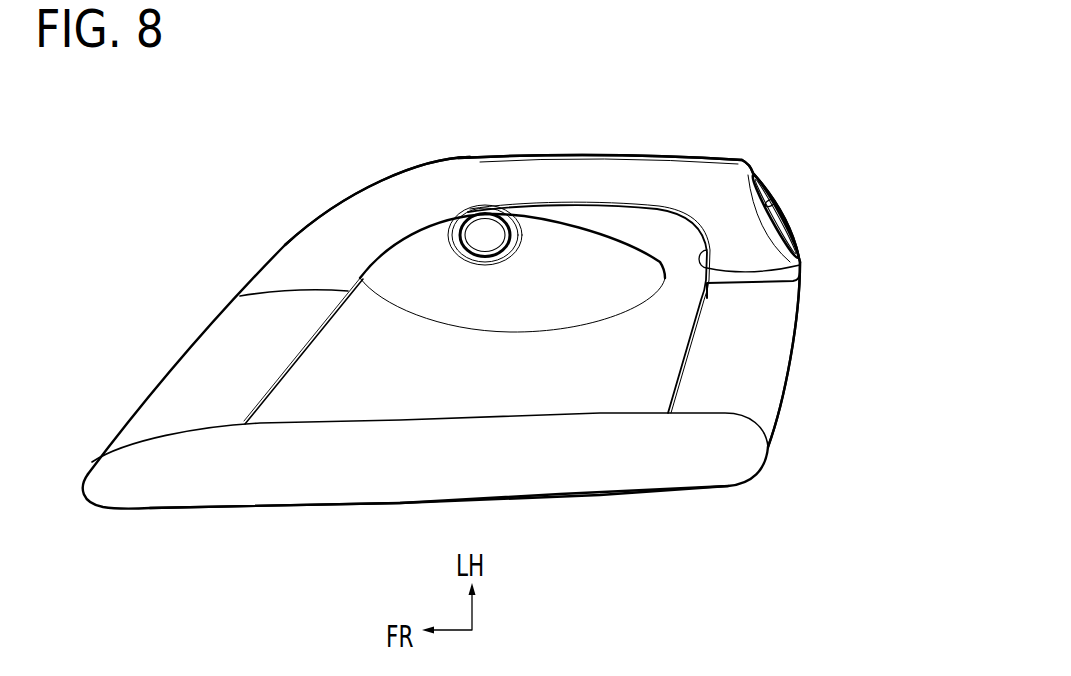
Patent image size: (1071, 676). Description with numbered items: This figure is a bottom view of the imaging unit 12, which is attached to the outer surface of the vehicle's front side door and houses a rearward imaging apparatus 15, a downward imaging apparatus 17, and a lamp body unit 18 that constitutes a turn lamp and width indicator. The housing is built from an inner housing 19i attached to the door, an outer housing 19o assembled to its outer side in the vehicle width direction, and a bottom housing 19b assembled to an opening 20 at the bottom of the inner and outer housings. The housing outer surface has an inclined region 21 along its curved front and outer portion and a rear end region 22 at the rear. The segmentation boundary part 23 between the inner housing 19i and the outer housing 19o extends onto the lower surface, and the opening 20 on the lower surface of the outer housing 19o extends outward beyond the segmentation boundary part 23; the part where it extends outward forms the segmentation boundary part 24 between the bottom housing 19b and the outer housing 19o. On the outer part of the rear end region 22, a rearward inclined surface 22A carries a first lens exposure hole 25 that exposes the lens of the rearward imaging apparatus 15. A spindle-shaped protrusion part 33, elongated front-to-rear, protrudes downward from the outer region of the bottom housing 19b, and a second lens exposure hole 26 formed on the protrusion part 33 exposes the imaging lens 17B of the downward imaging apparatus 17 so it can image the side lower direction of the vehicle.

The imaging unit 12 is at (752, 140).
The rearward imaging apparatus 15 is at (786, 214).
The downward imaging apparatus 17 is at (466, 208).
The imaging lens 17B is at (490, 228).
The lamp body unit 18 is at (586, 144).
The outer housing 19o is at (327, 231).
The inner housing 19i is at (185, 363).
The bottom housing 19b is at (353, 390).
The opening 20 is at (800, 265).
The inclined region 21 is at (288, 248).
The rear end region 22 is at (800, 310).
The rearward inclined surface 22A is at (769, 192).
The segmentation boundary part 23 is at (262, 292).
The segmentation boundary part 24 is at (615, 204).
The first lens exposure hole 25 is at (773, 202).
The second lens exposure hole 26 is at (481, 252).
The protrusion part 33 is at (534, 298).